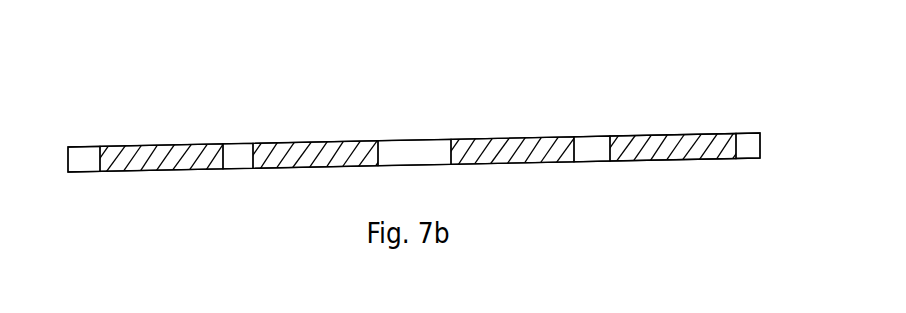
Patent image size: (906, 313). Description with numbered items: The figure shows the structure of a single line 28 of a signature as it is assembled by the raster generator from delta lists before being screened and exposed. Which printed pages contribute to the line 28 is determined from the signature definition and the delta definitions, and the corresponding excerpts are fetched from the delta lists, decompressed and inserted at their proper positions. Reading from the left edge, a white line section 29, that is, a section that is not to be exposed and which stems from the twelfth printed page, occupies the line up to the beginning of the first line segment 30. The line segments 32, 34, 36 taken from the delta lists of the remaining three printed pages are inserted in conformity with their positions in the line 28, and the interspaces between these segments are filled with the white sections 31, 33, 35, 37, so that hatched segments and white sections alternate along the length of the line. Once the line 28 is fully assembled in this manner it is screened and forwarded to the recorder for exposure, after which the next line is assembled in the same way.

The line 28 is at (762, 140).
The white line section 29 is at (81, 153).
The line segment 30 is at (158, 152).
The white section 31 is at (242, 150).
The line segment 32 is at (320, 148).
The white section 33 is at (407, 147).
The line segment 34 is at (503, 143).
The white section 35 is at (592, 142).
The line segment 36 is at (670, 140).
The white section 37 is at (747, 139).